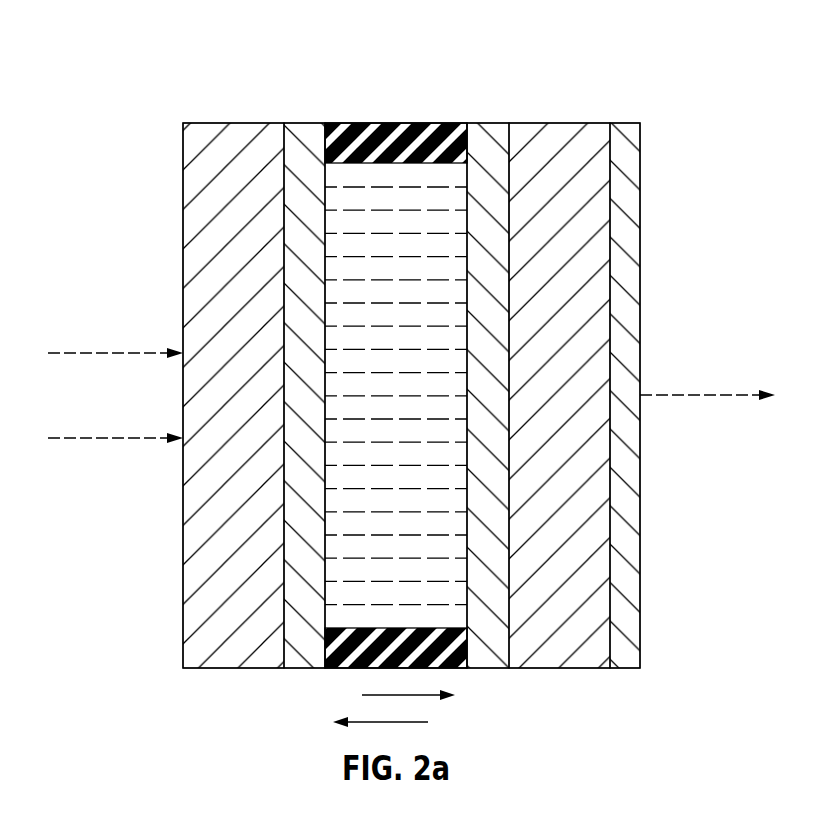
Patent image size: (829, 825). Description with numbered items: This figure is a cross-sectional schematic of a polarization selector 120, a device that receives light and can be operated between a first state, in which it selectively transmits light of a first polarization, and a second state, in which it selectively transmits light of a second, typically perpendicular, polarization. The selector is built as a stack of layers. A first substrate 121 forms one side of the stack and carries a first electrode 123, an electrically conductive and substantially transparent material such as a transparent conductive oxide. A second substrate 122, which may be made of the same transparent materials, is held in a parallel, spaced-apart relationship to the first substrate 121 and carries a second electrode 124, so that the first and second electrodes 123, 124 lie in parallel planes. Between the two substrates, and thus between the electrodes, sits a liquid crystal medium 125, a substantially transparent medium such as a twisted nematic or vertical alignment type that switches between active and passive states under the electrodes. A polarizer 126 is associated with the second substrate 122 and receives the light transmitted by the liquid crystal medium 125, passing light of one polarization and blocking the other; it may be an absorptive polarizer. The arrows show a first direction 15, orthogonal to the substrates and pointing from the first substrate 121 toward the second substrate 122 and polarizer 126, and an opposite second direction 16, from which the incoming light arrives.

The polarization selector 120 is at (156, 102).
The first substrate 121 is at (237, 218).
The second substrate 122 is at (565, 245).
The first electrode 123 is at (297, 122).
The second electrode 124 is at (497, 122).
The liquid crystal medium 125 is at (415, 428).
The polarizer 126 is at (623, 313).
The first direction 15 is at (395, 695).
The second direction 16 is at (396, 723).